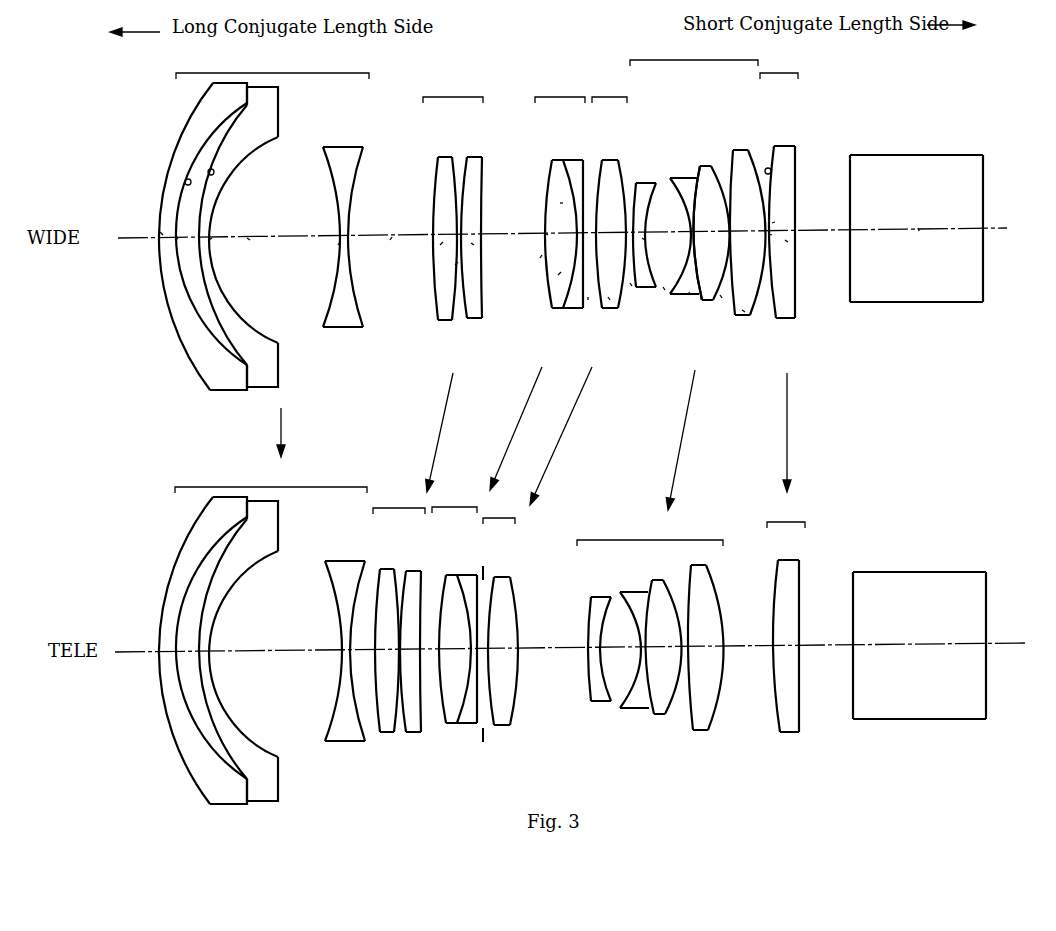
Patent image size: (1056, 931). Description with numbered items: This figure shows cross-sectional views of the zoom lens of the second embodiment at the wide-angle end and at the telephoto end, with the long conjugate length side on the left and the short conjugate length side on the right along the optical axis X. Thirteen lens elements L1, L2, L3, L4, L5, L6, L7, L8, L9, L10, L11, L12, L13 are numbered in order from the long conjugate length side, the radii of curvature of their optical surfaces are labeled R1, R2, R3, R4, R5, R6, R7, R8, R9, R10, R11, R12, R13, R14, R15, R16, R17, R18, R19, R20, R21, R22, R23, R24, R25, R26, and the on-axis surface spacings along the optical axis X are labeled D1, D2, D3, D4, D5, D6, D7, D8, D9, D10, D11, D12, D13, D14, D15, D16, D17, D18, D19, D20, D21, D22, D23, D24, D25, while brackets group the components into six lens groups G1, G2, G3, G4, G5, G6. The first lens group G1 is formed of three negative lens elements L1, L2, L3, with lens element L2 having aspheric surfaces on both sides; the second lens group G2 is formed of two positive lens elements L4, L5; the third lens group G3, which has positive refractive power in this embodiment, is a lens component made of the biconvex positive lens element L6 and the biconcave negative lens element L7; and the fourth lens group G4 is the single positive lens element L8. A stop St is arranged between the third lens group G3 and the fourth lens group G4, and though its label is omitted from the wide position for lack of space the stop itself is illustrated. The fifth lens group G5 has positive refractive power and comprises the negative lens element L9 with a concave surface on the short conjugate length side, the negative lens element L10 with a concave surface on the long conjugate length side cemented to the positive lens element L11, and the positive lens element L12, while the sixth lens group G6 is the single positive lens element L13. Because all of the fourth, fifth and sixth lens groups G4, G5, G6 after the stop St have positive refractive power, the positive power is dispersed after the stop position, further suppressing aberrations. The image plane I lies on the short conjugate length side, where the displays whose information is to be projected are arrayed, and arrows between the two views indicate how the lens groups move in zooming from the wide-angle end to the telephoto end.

The first lens group G1 is at (253, 428).
The second lens group G2 is at (448, 403).
The third lens group G3 is at (508, 398).
The fourth lens group G4 is at (555, 399).
The fifth lens group G5 is at (698, 383).
The sixth lens group G6 is at (801, 391).
The first lens element L1 is at (192, 443).
The second lens element L2 is at (259, 444).
The third lens element L3 is at (349, 429).
The fourth lens element L4 is at (417, 424).
The fifth lens element L5 is at (463, 423).
The sixth lens element L6 is at (505, 424).
The seventh lens element L7 is at (520, 441).
The eighth lens element L8 is at (557, 413).
The ninth lens element L9 is at (619, 411).
The tenth lens element L10 is at (676, 385).
The eleventh lens element L11 is at (703, 399).
The twelfth lens element L12 is at (762, 408).
The thirteenth lens element L13 is at (806, 419).
The radius of curvature of first optical surface R1 is at (175, 150).
The radius of curvature of second optical surface R2 is at (185, 180).
The radius of curvature of third optical surface R3 is at (214, 174).
The radius of curvature of fourth optical surface R4 is at (242, 160).
The radius of curvature of fifth optical surface R5 is at (329, 172).
The radius of curvature of sixth optical surface R6 is at (360, 173).
The radius of curvature of seventh optical surface R7 is at (434, 185).
The radius of curvature of eighth optical surface R8 is at (455, 160).
The radius of curvature of ninth optical surface R9 is at (466, 170).
The radius of curvature of tenth optical surface R10 is at (482, 178).
The radius of curvature of eleventh optical surface R11 is at (547, 185).
The radius of curvature of twelfth optical surface R12 is at (562, 305).
The radius of curvature of thirteenth optical surface R13 is at (580, 312).
The radius of curvature of fourteenth optical surface R14 is at (598, 165).
The radius of curvature of fifteenth optical surface R15 is at (625, 175).
The radius of curvature of sixteenth optical surface R16 is at (636, 183).
The radius of curvature of seventeenth optical surface R17 is at (655, 182).
The radius of curvature of eighteenth optical surface R18 is at (672, 176).
The radius of curvature of nineteenth optical surface R19 is at (702, 165).
The radius of curvature of twentieth optical surface R20 is at (716, 165).
The radius of curvature of twenty-first optical surface R21 is at (735, 152).
The radius of curvature of twenty-second optical surface R22 is at (771, 170).
The radius of curvature of twenty-third optical surface R23 is at (774, 166).
The radius of curvature of twenty-fourth optical surface R24 is at (797, 189).
The radius of curvature of twenty-fifth optical surface R25 is at (851, 165).
The radius of curvature of twenty-sixth optical surface R26 is at (984, 190).
The on-axis surface spacing D1 is at (160, 232).
The on-axis surface spacing D2 is at (175, 240).
The on-axis surface spacing D3 is at (212, 238).
The on-axis surface spacing D4 is at (250, 240).
The on-axis surface spacing D5 is at (338, 245).
The on-axis surface spacing D6 is at (390, 240).
The on-axis surface spacing D7 is at (440, 245).
The on-axis surface spacing D8 is at (455, 265).
The on-axis surface spacing D9 is at (474, 245).
The on-axis surface spacing D10 is at (540, 258).
The on-axis surface spacing D11 is at (545, 233).
The on-axis surface spacing D12 is at (558, 275).
The on-axis surface spacing D13 is at (560, 203).
The on-axis surface spacing D14 is at (588, 300).
The on-axis surface spacing D15 is at (610, 300).
The on-axis surface spacing D16 is at (632, 286).
The on-axis surface spacing D17 is at (645, 240).
The on-axis surface spacing D18 is at (665, 290).
The on-axis surface spacing D19 is at (690, 295).
The on-axis surface spacing D20 is at (722, 298).
The on-axis surface spacing D21 is at (745, 312).
The on-axis surface spacing D22 is at (775, 222).
The on-axis surface spacing D23 is at (772, 235).
The on-axis surface spacing D24 is at (788, 242).
The on-axis surface spacing D25 is at (918, 228).
The optical axis X is at (122, 240).
The image plane I is at (945, 408).
The stop St is at (484, 668).